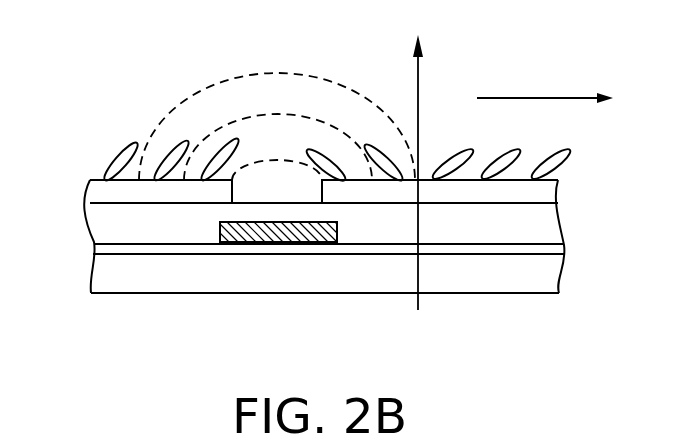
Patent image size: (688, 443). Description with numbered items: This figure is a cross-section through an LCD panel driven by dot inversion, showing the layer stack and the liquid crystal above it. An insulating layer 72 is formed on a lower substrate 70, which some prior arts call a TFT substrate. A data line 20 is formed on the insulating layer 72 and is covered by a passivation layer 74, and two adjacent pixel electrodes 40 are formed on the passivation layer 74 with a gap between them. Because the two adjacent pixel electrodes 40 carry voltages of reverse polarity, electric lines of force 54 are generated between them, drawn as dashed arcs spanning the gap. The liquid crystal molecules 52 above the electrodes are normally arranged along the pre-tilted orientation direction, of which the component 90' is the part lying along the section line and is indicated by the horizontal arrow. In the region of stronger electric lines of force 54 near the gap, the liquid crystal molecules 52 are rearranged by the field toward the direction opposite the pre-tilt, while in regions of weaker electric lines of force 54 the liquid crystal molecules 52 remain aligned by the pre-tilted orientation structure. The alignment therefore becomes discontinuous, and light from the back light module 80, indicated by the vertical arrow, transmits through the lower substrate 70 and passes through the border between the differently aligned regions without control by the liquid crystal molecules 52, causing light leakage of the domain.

The data line 20 is at (270, 243).
The pixel electrode 40 is at (88, 184).
The liquid crystal molecules 52 is at (545, 166).
The electric lines of force 54 is at (304, 73).
The lower substrate 70 is at (560, 282).
The insulating layer 72 is at (556, 249).
The passivation layer 74 is at (548, 217).
The back light module 80 is at (428, 163).
The component of orientation direction 90' is at (562, 99).